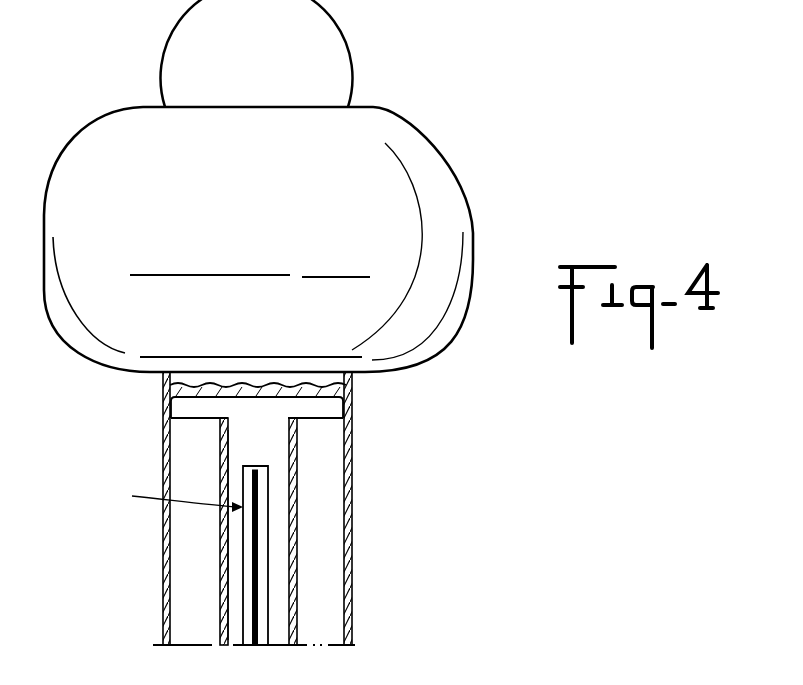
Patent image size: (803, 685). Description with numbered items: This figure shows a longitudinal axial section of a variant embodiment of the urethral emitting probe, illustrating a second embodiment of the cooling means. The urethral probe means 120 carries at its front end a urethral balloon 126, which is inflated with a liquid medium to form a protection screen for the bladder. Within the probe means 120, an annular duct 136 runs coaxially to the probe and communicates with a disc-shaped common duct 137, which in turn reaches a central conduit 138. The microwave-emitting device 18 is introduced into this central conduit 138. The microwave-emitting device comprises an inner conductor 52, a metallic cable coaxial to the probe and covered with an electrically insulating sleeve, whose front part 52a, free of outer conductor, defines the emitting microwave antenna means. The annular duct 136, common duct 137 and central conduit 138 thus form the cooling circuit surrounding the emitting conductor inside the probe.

The urethral balloon 126 is at (472, 215).
The urethral probe means 120 is at (352, 518).
The disc-shaped common duct 137 is at (314, 411).
The annular duct 136 is at (213, 470).
The central conduit 138 is at (232, 548).
The inner conductor 52 is at (252, 605).
The front part of the inner conductor 52a is at (260, 495).
The microwave-emitting device 18 is at (173, 495).